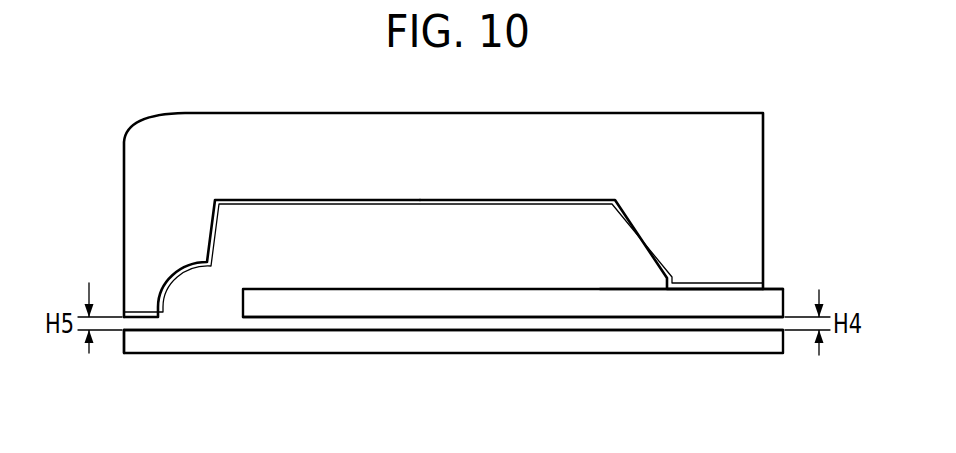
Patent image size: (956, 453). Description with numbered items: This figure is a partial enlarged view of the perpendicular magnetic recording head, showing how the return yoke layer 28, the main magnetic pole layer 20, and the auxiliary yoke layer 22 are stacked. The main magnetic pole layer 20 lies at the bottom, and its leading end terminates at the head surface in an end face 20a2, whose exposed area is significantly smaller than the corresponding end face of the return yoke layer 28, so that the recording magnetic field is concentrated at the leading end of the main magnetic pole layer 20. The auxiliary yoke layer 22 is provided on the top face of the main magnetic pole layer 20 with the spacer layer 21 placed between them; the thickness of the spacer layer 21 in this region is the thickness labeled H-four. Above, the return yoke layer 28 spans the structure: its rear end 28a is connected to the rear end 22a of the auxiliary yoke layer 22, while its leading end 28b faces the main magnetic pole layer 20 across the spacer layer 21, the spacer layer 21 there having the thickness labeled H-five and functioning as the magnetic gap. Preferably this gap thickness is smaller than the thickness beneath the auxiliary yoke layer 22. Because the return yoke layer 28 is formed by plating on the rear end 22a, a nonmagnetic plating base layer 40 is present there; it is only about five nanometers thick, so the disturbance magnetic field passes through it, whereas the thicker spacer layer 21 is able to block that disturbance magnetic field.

The return yoke layer 28 is at (738, 141).
The rear end of the return yoke layer 28a is at (731, 231).
The leading end of the return yoke layer 28b is at (145, 225).
The nonmagnetic plating base layer 40 is at (737, 283).
The auxiliary yoke layer 22 is at (682, 302).
The rear end of the auxiliary yoke layer 22a is at (741, 304).
The spacer layer 21 is at (408, 320).
The main magnetic pole layer 20 is at (535, 343).
The end face of the leading end 20a2 is at (123, 342).